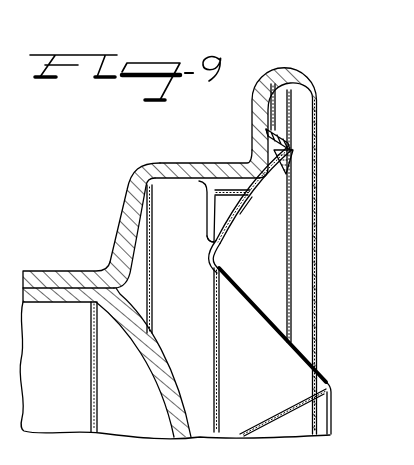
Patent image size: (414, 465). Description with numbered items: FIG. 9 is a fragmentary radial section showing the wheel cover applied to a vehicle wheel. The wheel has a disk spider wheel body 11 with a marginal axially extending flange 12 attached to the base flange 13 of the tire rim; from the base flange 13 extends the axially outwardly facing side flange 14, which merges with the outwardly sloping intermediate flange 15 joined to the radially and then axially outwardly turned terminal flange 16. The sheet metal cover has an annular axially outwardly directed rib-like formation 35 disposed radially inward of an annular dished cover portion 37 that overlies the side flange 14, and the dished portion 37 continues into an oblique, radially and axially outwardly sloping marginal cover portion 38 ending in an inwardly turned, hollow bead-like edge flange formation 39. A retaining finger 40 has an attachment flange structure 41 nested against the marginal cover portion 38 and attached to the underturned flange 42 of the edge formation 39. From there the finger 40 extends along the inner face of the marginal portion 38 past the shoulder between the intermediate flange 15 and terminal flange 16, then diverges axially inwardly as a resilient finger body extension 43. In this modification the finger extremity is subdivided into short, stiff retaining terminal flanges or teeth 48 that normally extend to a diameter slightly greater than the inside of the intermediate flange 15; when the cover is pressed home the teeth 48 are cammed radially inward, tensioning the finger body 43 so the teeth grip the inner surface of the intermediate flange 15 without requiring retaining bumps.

The disk spider wheel body 11 is at (173, 405).
The marginal flange 12 is at (46, 293).
The base flange 13 is at (70, 272).
The side flange 14 is at (124, 225).
The intermediate flange 15 is at (185, 163).
The terminal flange 16 is at (305, 67).
The rib-like formation 35 is at (331, 392).
The dished cover portion 37 is at (221, 266).
The marginal cover portion 38 is at (266, 200).
The edge flange formation 39 is at (289, 140).
The retaining finger 40 is at (207, 241).
The attachment flange structure 41 is at (292, 149).
The underturned flange 42 is at (266, 144).
The finger body extension 43 is at (228, 205).
The retaining terminal flange 48 is at (205, 183).